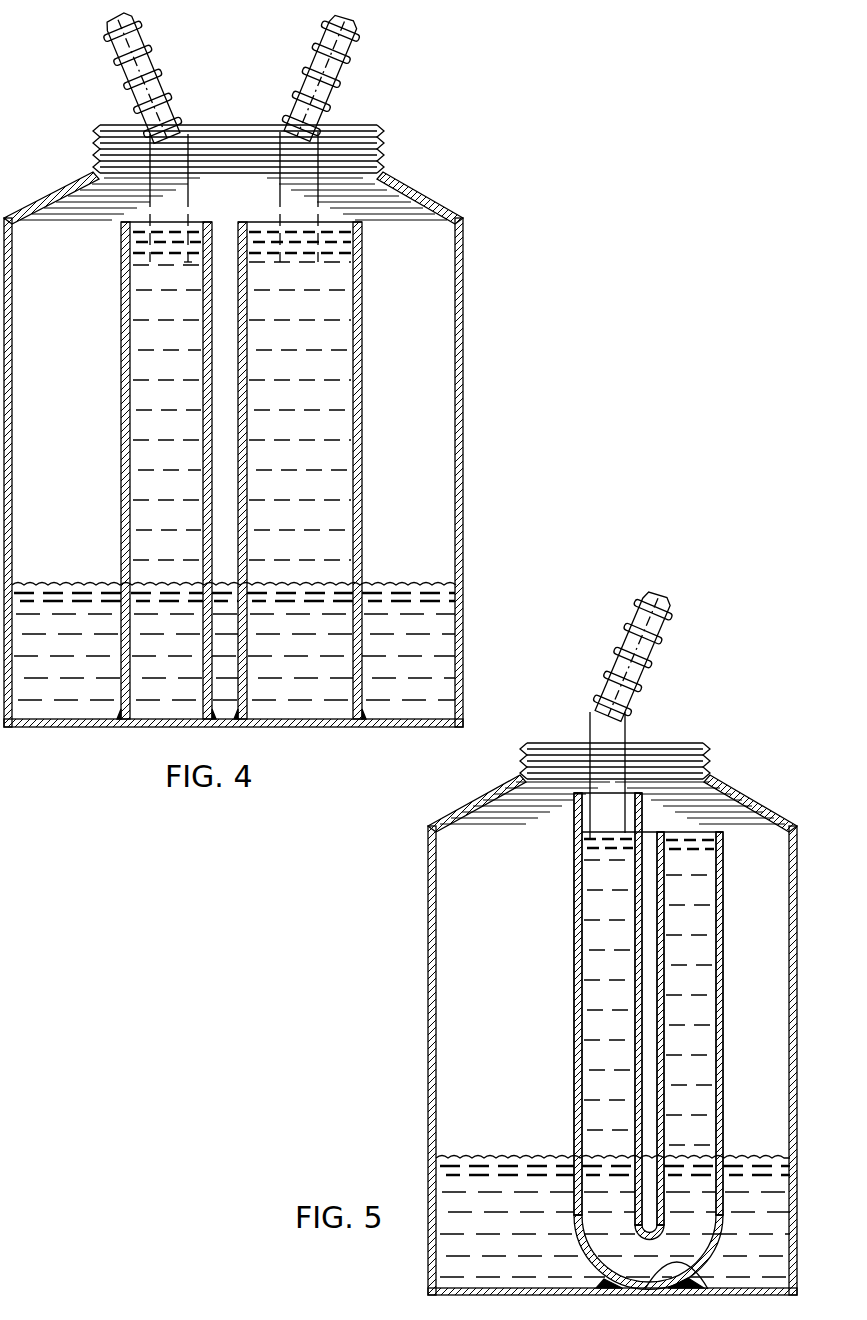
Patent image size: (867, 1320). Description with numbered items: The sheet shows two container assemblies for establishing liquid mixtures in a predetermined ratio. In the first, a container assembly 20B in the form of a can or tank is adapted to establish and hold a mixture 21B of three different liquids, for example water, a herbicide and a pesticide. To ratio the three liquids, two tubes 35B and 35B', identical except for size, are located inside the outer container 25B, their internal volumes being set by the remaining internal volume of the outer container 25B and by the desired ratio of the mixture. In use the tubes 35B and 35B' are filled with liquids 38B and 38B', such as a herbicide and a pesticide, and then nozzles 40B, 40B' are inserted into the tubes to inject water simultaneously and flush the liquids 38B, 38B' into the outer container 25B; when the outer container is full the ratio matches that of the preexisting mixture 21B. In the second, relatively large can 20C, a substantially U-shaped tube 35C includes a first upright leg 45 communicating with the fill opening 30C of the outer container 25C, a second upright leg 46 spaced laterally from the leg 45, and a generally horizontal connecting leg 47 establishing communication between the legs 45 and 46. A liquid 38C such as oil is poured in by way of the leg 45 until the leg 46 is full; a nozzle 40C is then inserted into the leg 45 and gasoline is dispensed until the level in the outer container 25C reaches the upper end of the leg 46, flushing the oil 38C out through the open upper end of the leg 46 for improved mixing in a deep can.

In FIG. 4, the container assembly 20B is at (500, 318).
In FIG. 4, the outer container 25B is at (470, 551).
In FIG. 4, the mixture 21B is at (400, 596).
In FIG. 4, the tube 35B is at (121, 470).
In FIG. 4, the tube 35B' is at (339, 470).
In FIG. 4, the liquid 38B is at (124, 396).
In FIG. 4, the liquid 38B' is at (340, 396).
In FIG. 4, the nozzle 40B is at (108, 135).
In FIG. 4, the nozzle 40B' is at (285, 136).
In FIG. 5, the can 20C is at (808, 872).
In FIG. 5, the outer container 25C is at (798, 1030).
In FIG. 5, the fill opening 30C is at (690, 757).
In FIG. 5, the U-shaped tube 35C is at (570, 978).
In FIG. 5, the first upright leg 45 is at (573, 1015).
In FIG. 5, the second upright leg 46 is at (726, 990).
In FIG. 5, the liquid 38C is at (610, 1058).
In FIG. 5, the connecting leg 47 is at (700, 1262).
In FIG. 5, the nozzle 40C is at (610, 660).